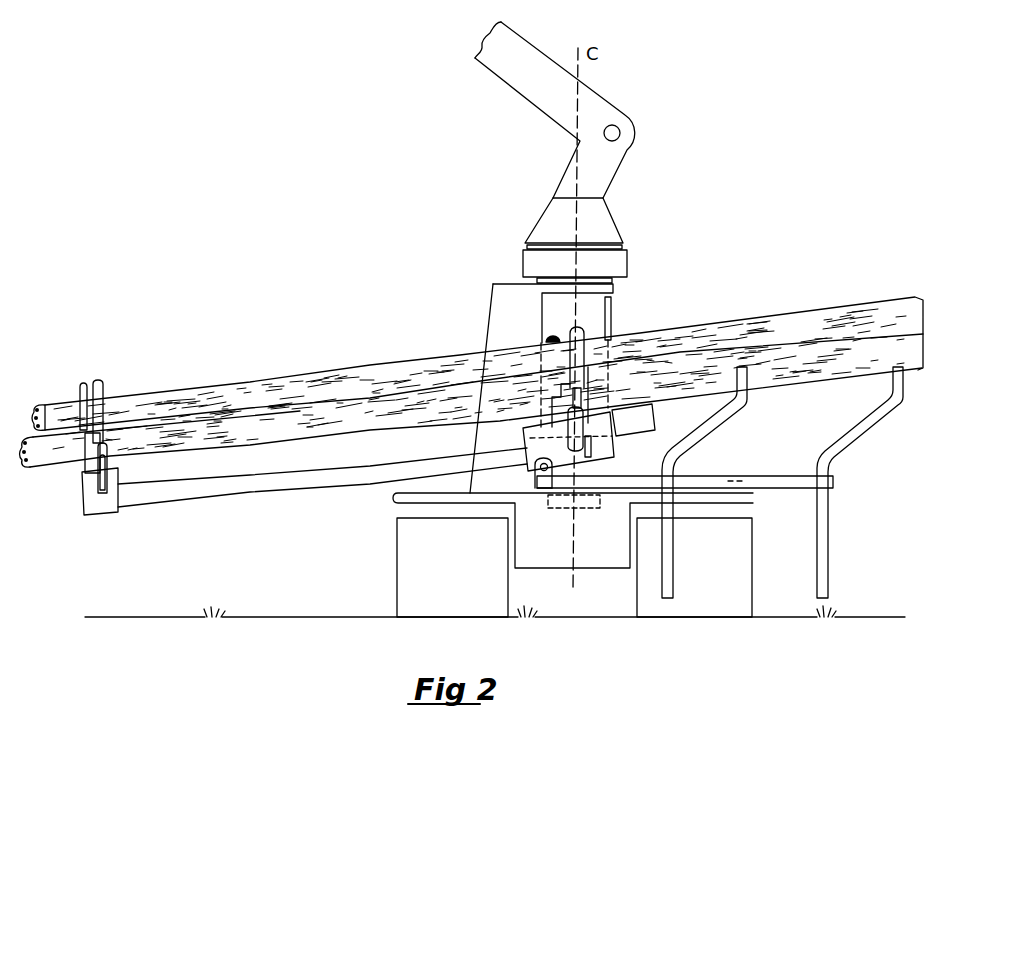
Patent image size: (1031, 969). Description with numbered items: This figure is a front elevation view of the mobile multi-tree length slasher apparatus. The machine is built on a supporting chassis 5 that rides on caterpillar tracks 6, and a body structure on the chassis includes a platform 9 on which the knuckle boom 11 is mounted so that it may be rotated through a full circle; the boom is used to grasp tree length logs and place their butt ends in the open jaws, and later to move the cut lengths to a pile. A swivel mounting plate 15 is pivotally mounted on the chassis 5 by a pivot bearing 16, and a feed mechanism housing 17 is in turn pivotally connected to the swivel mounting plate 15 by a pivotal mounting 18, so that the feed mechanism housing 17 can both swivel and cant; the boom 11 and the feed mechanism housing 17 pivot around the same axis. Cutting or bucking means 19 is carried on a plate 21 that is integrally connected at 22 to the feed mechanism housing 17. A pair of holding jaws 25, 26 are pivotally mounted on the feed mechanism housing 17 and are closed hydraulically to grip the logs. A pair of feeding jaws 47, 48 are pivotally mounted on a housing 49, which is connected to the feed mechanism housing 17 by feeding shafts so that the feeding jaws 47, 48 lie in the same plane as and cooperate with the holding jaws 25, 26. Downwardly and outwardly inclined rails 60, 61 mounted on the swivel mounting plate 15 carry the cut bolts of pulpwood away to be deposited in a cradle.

The supporting chassis 5 is at (575, 565).
The caterpillar tracks 6 is at (397, 566).
The platform 9 is at (627, 263).
The knuckle boom 11 is at (601, 80).
The swivel mounting plate 15 is at (537, 480).
The pivot bearing 16 is at (577, 492).
The feed mechanism housing 17 is at (612, 458).
The pivotal mounting 18 is at (546, 450).
The cutting or bucking means 19 is at (612, 326).
The plate 21 is at (654, 420).
The connection of plate to feed mechanism housing 22 is at (613, 437).
The holding jaw 25 is at (552, 338).
The holding jaw 26 is at (586, 327).
The feeding jaw 47 is at (81, 387).
The feeding jaw 48 is at (100, 382).
The housing 49 is at (110, 512).
The rail 60 is at (700, 446).
The rail 61 is at (850, 444).